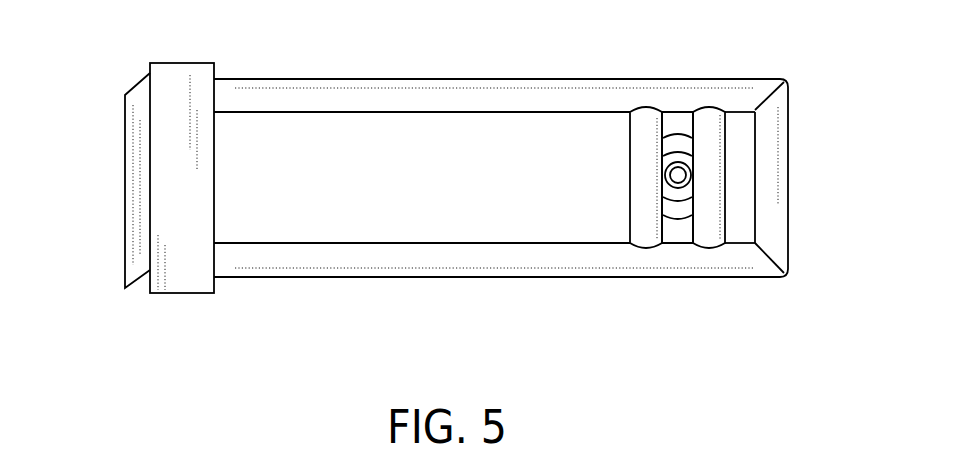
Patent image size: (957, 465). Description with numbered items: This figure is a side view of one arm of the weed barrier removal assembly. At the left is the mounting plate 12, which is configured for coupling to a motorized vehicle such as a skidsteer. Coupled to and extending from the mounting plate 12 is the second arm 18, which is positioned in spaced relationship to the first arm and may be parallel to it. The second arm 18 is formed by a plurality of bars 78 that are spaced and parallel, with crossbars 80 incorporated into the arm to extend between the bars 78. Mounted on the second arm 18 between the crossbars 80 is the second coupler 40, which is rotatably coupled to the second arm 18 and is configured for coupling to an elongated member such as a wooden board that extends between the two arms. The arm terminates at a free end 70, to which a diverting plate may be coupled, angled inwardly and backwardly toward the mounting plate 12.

The mounting plate 12 is at (133, 188).
The second arm 18 is at (340, 292).
The bars 78 is at (505, 92).
The free end 70 is at (788, 171).
The crossbars 80 is at (640, 222).
The second coupler 40 is at (679, 147).